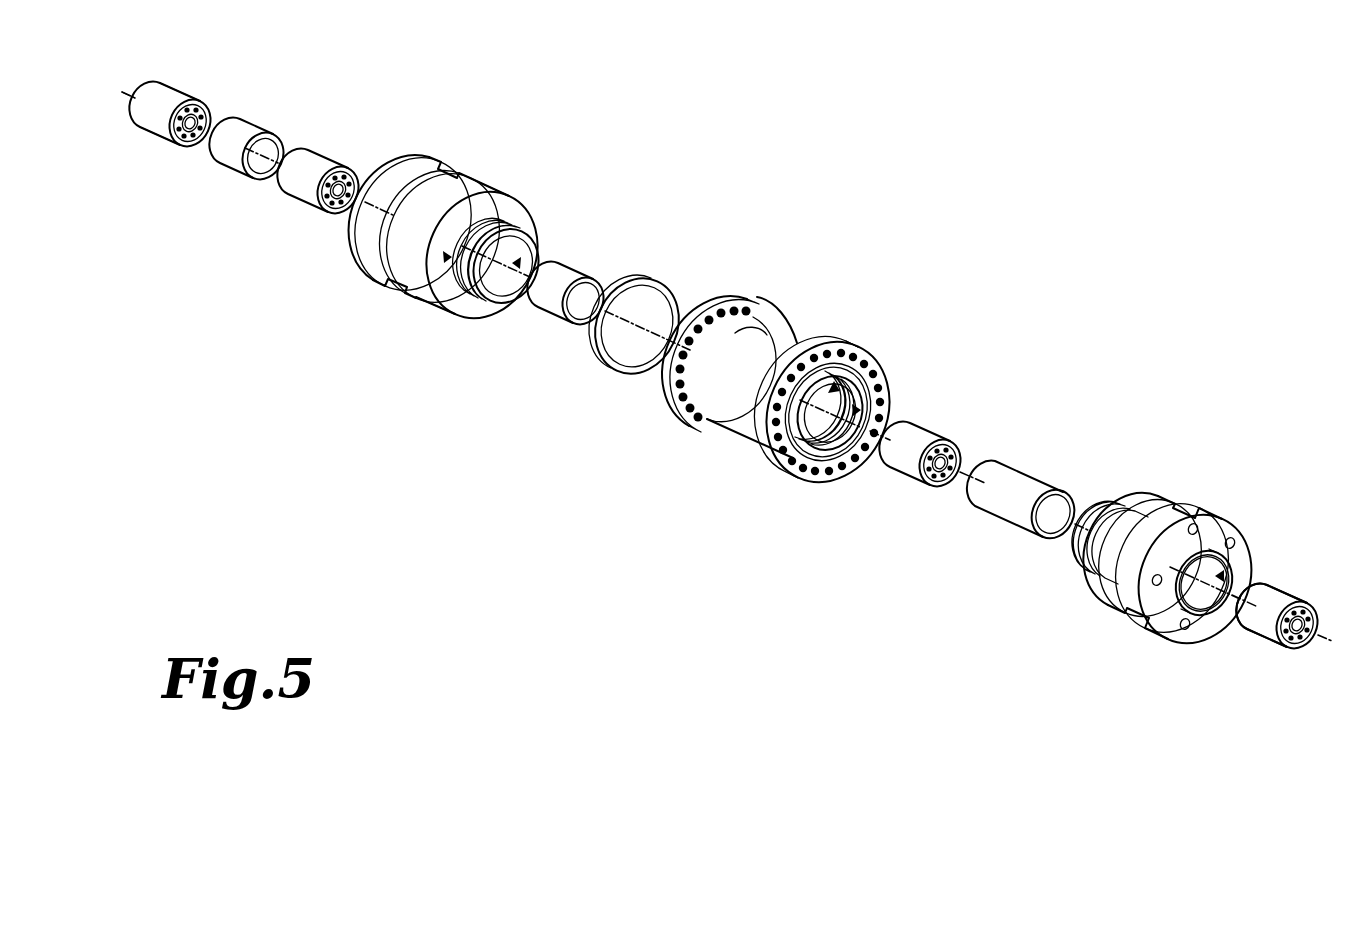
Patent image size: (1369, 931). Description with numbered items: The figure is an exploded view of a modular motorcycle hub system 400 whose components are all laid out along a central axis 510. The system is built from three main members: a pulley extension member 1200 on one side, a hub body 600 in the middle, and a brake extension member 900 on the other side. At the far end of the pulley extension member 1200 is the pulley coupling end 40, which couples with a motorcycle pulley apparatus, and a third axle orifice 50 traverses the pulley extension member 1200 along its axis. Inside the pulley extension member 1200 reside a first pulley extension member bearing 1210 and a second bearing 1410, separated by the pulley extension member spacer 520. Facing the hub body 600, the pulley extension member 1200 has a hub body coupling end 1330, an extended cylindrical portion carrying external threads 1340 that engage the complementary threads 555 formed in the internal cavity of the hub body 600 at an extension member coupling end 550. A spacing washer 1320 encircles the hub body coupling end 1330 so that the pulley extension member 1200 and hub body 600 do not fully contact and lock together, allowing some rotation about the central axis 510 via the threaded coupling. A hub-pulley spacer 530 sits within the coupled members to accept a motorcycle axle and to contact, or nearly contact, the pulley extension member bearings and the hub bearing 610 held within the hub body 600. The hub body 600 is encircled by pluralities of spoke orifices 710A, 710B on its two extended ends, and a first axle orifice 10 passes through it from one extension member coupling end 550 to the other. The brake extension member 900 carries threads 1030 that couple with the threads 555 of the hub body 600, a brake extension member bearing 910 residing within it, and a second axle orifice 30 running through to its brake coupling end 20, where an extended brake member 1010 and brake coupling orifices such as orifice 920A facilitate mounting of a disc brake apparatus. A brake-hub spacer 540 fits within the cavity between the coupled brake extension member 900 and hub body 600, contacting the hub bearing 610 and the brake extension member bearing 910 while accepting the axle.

The modular hub system 400 is at (876, 147).
The central axis 510 is at (122, 94).
The pulley extension member bearing 1210 is at (153, 138).
The pulley extension member spacer 520 is at (225, 168).
The bearing 1410 is at (302, 205).
The pulley coupling end 40 is at (373, 158).
The pulley extension member 1200 is at (741, 343).
The hub body coupling end 1330 is at (428, 283).
The threads 1340 is at (463, 290).
The hub-pulley spacer 530 is at (545, 310).
The third axle orifice 50 is at (535, 268).
The spacing washer 1320 is at (600, 355).
The hub body 600 is at (773, 368).
The first axle orifice 10 is at (907, 369).
The spoke orifices 710A is at (672, 420).
The spoke orifices 710B is at (762, 462).
The threads 555 is at (822, 458).
The extension member coupling end 550 is at (900, 394).
The hub bearing 610 is at (895, 468).
The threads 1030 is at (1089, 495).
The brake-hub spacer 540 is at (985, 520).
The brake extension member 900 is at (1198, 534).
The brake coupling end 20 is at (1250, 540).
The second axle orifice 30 is at (1245, 582).
The brake coupling orifice 920A is at (1153, 580).
The extended brake member 1010 is at (1180, 608).
The brake extension member bearing 910 is at (1252, 630).